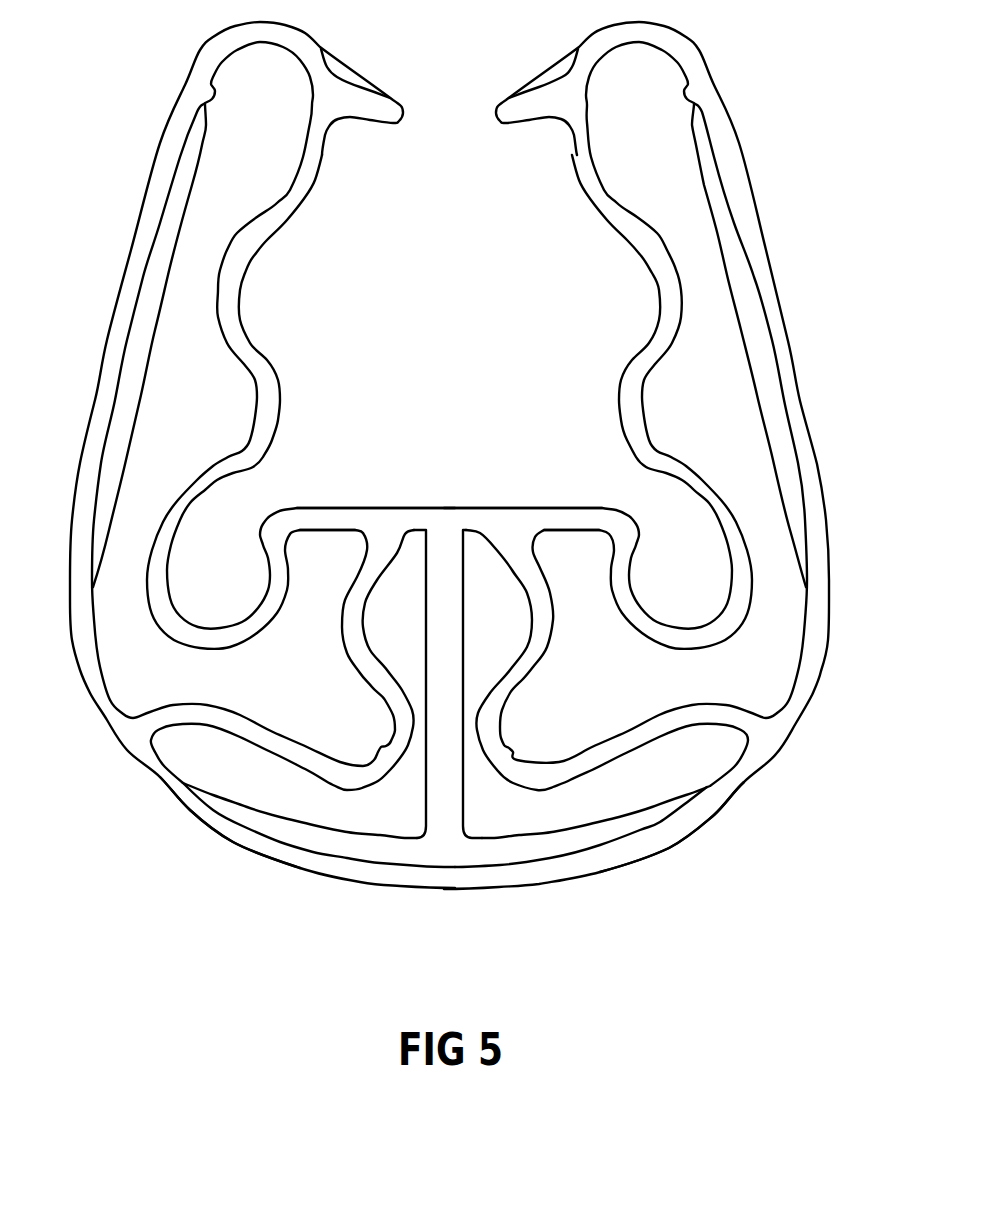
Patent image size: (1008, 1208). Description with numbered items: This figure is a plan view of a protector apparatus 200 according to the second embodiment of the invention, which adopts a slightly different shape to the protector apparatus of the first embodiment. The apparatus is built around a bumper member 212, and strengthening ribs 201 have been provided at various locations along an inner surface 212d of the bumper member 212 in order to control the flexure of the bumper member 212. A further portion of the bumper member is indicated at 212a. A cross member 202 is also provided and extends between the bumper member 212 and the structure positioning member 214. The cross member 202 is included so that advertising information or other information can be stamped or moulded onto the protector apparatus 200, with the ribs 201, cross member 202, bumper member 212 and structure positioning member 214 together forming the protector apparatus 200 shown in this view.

The protector apparatus 200 is at (453, 494).
The strengthening ribs 201 is at (159, 253).
The cross member 202 is at (443, 595).
The bumper member 212 is at (449, 491).
The lower left wall portion 212a is at (233, 840).
The inner surface 212d is at (672, 846).
The structure positioning member 214 is at (355, 508).